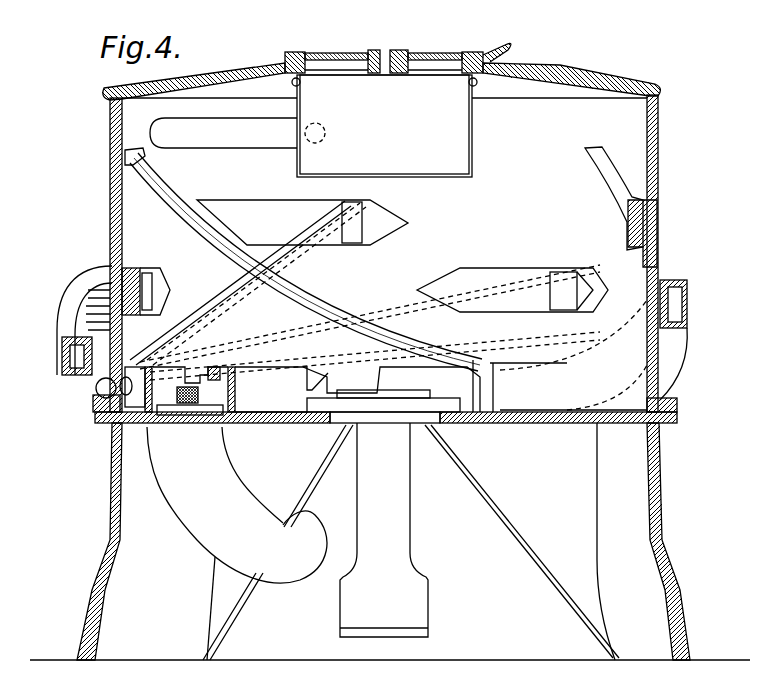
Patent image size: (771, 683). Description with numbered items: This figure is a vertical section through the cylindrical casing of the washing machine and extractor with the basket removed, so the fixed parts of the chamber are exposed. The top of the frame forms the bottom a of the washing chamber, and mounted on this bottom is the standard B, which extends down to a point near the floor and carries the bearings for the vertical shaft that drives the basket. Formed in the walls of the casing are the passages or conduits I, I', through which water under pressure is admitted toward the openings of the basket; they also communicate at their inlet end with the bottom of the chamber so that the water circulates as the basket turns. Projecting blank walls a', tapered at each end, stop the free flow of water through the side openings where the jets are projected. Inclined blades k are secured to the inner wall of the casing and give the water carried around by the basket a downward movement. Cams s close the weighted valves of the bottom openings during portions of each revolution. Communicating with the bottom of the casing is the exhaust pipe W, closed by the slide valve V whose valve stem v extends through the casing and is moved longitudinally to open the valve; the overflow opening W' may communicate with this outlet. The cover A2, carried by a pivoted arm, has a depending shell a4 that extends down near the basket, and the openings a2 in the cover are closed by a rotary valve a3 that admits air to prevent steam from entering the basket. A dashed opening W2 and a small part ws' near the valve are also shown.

The bottom of the washing chamber a is at (386, 422).
The projecting blank walls a' is at (377, 257).
The openings in the cover a2 is at (428, 71).
The rotary valve a3 is at (315, 63).
The shell a4 is at (384, 126).
The cover A2 is at (612, 86).
The standard B is at (384, 530).
The passage or conduit I is at (374, 332).
The passage or conduit I' is at (370, 322).
The inclined blades k is at (163, 180).
The cam s is at (435, 391).
The valve stem v is at (187, 418).
The valve V is at (205, 410).
The exhaust pipe W is at (237, 464).
The overflow opening W' is at (223, 133).
The port W2 is at (326, 135).
The screw ws' is at (281, 389).